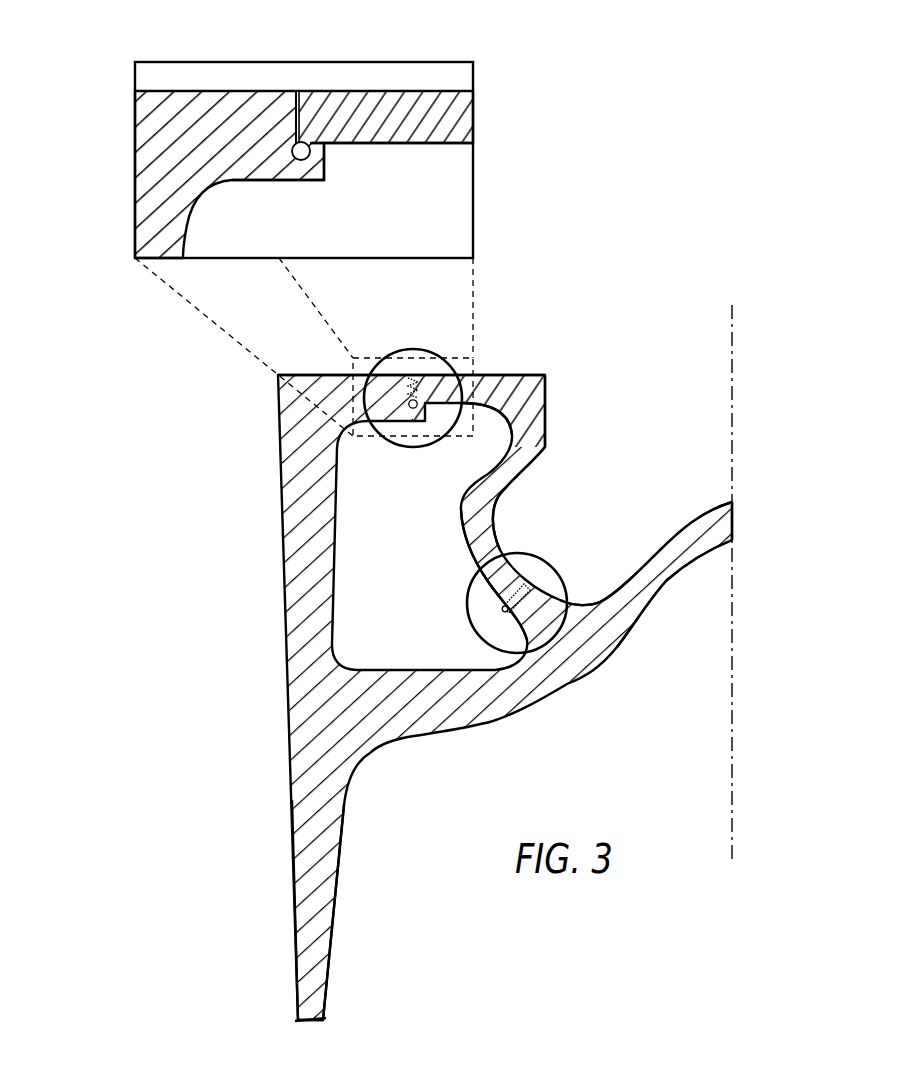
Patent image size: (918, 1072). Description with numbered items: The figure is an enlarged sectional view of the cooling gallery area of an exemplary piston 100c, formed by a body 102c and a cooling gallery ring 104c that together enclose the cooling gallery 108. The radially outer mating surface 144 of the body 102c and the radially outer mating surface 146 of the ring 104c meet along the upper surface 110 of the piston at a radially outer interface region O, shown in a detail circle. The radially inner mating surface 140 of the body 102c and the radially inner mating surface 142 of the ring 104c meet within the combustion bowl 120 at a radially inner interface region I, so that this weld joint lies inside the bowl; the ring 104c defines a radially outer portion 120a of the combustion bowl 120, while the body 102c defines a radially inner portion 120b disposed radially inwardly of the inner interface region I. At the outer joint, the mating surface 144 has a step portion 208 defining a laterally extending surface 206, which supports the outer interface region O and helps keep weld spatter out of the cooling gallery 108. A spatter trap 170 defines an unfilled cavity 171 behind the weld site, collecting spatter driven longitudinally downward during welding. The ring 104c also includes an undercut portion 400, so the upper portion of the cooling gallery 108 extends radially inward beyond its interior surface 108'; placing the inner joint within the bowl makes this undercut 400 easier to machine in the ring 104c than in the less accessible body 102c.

The piston 100c is at (735, 166).
The body 102c is at (152, 157).
The cooling gallery ring 104c is at (440, 122).
The cooling gallery 108 is at (285, 827).
The interior surface of the cooling gallery 108' is at (425, 545).
The upper surface 110 is at (538, 373).
The combustion bowl 120 is at (649, 474).
The radially outer portion of the combustion bowl 120a is at (510, 477).
The radially inner portion of the combustion bowl 120b is at (697, 510).
The radially inner mating surface of the body 140 is at (520, 603).
The radially inner mating surface of the ring 142 is at (507, 610).
The radially outer mating surface of the body 144 is at (292, 120).
The radially outer mating surface of the ring 146 is at (299, 99).
The spatter trap 170 is at (297, 170).
The cavity 171 is at (292, 152).
The laterally extending surface 206 is at (320, 143).
The step portion 208 is at (318, 174).
The undercut portion 400 is at (515, 427).
The radially outer interface region O is at (413, 349).
The radially inner interface region I is at (551, 565).